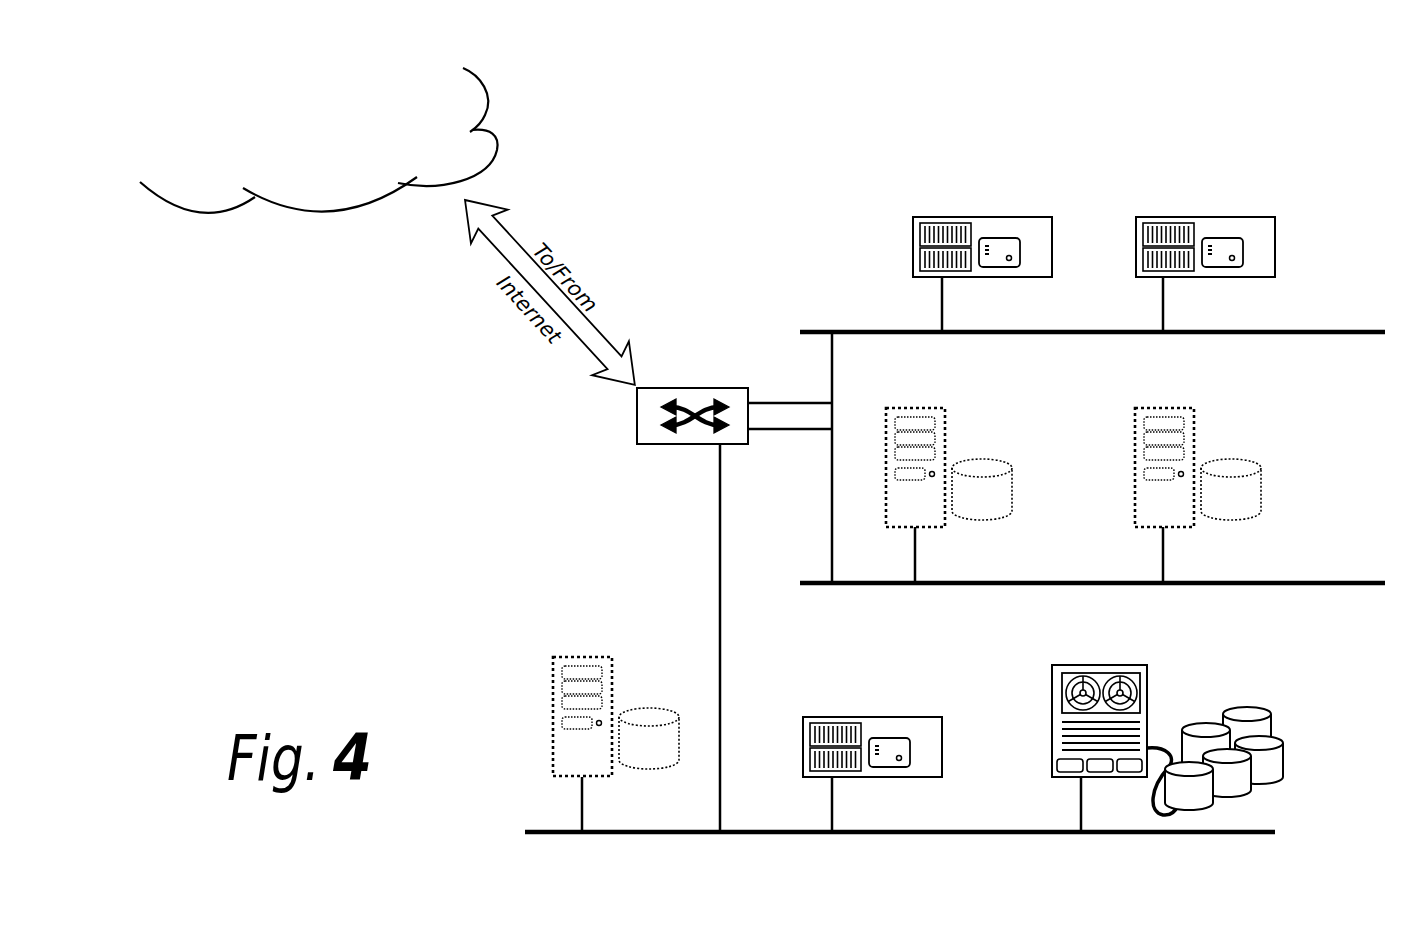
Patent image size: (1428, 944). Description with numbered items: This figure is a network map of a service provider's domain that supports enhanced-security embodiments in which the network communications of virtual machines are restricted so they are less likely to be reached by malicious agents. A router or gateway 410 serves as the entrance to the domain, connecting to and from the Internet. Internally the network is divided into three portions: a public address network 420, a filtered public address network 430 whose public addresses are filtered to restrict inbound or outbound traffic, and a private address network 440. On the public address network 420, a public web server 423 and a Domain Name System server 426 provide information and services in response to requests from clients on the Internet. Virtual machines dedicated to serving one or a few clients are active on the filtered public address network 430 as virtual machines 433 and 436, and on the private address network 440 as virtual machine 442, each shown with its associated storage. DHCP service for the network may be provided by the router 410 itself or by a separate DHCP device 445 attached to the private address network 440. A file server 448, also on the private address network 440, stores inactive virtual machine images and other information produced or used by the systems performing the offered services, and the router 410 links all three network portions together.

The router or gateway 410 is at (637, 429).
The public address network 420 is at (1357, 334).
The public web server 423 is at (1260, 277).
The Domain Name System (DNS) server 426 is at (1038, 277).
The filtered public address network 430 is at (1357, 585).
The virtual machine 433 is at (946, 429).
The virtual machine 436 is at (1195, 429).
The private address network 440 is at (1248, 834).
The virtual machine 442 is at (614, 677).
The DHCP device 445 is at (928, 777).
The file server 448 is at (1149, 677).